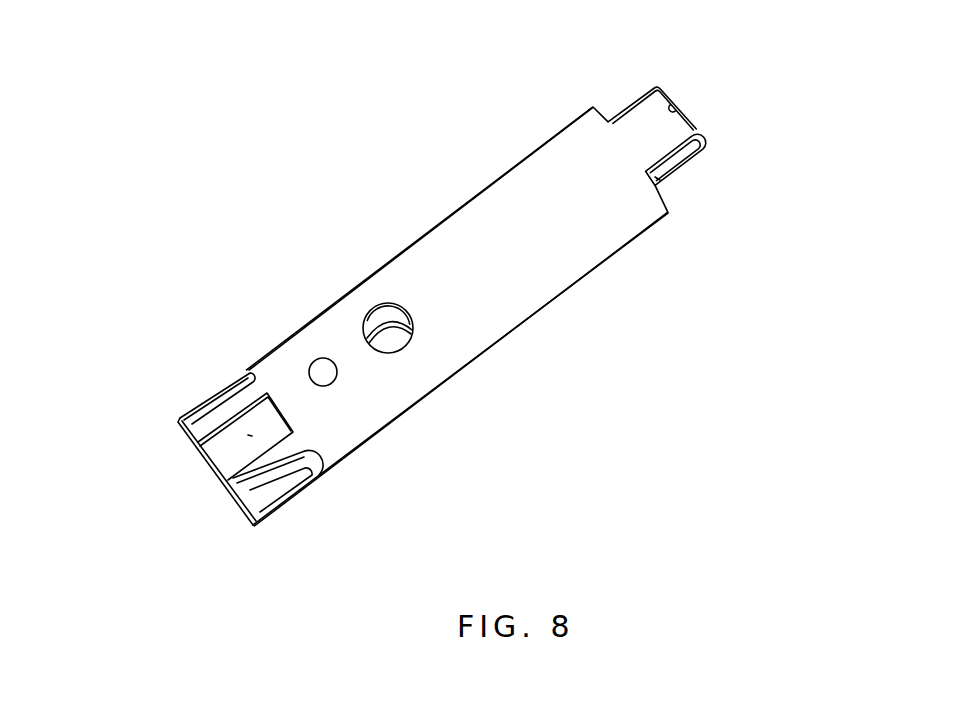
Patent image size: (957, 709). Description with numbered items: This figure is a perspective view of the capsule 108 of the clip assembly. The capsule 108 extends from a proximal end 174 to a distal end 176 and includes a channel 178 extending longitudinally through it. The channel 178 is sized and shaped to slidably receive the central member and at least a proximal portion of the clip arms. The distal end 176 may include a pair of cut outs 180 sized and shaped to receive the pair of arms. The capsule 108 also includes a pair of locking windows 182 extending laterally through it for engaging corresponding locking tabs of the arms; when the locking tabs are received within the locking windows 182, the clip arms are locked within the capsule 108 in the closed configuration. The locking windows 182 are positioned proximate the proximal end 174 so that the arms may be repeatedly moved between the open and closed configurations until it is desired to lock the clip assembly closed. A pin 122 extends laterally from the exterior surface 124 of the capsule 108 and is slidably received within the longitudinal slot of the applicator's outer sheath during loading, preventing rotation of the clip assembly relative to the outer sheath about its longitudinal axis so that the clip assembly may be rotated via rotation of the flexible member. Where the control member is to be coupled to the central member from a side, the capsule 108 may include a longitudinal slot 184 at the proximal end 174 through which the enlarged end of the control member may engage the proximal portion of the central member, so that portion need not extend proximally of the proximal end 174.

The capsule 108 is at (327, 227).
The pin 122 is at (315, 360).
The exterior surface 124 is at (468, 313).
The proximal end 174 is at (238, 503).
The distal end 176 is at (648, 115).
The channel 178 is at (225, 452).
The cut outs 180 is at (655, 177).
The locking windows 182 is at (213, 405).
The longitudinal slot 184 is at (248, 435).